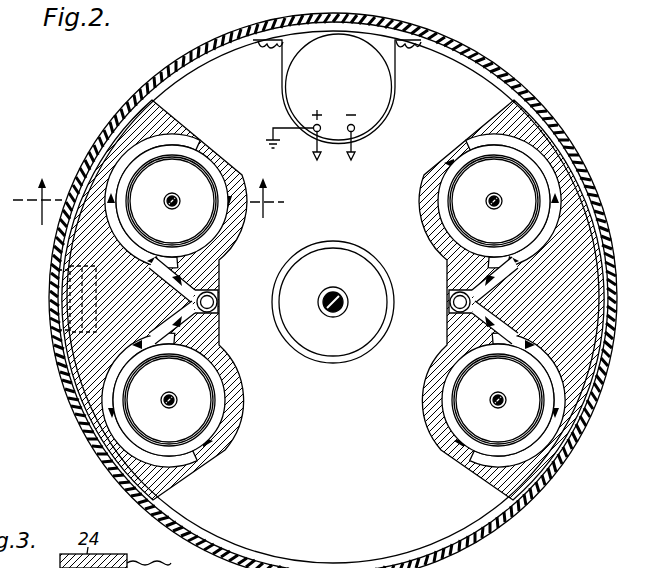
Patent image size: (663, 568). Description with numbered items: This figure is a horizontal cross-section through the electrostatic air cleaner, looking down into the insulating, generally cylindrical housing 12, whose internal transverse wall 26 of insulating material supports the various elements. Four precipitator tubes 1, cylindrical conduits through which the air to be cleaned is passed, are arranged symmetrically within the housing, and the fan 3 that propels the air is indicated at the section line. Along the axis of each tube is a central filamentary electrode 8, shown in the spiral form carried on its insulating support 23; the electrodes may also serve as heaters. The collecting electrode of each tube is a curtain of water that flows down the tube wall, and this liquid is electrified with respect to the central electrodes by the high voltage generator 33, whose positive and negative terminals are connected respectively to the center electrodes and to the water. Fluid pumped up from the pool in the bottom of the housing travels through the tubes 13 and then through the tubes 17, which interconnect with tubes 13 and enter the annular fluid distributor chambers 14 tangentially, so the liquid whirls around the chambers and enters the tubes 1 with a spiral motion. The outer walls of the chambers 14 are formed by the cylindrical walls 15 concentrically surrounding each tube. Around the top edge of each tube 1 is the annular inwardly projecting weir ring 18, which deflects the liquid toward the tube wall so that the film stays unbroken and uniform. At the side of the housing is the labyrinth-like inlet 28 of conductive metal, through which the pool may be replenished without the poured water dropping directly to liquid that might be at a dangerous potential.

The precipitator tube 1 is at (212, 227).
The fan 3 is at (148, 198).
The central filamentary electrode 8 is at (166, 204).
The housing 12 is at (587, 180).
The tube 13 is at (219, 310).
The annular fluid distributor chamber 14 is at (195, 145).
The cylindrical wall 15 is at (218, 418).
The tube 17 is at (187, 320).
The weir ring 18 is at (190, 162).
The insulating support 23 is at (175, 203).
The internal transverse wall 26 is at (528, 508).
The labyrinth-like inlet 28 is at (83, 265).
The high voltage generator 33 is at (374, 112).